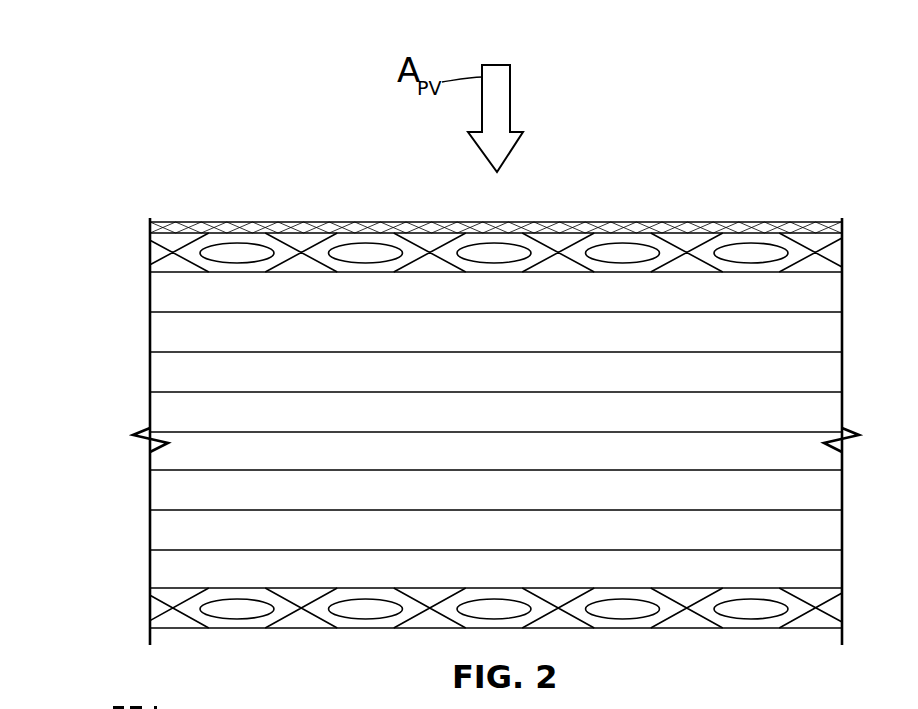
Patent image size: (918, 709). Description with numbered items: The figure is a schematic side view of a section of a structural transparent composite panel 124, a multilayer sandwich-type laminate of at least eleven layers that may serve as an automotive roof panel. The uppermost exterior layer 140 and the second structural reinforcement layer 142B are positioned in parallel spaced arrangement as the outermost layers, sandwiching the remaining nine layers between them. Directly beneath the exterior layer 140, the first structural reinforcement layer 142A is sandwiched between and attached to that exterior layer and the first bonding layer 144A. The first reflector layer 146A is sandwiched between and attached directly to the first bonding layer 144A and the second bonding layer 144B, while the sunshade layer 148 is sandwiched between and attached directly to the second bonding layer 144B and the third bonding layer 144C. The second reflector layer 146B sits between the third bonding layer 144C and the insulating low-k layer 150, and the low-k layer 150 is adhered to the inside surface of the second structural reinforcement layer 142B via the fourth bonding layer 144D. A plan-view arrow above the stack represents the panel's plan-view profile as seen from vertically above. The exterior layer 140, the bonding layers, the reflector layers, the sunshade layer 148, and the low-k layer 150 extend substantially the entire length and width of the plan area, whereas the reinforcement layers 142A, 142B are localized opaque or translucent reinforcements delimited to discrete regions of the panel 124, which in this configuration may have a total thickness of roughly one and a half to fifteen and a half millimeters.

The structural transparent composite panel 124 is at (210, 133).
The uppermost exterior layer 140 is at (150, 228).
The first structural reinforcement layer 142A is at (150, 244).
The first bonding layer 144A is at (150, 282).
The first reflector layer 146A is at (150, 323).
The second bonding layer 144B is at (150, 363).
The sunshade layer 148 is at (150, 402).
The third bonding layer 144C is at (150, 440).
The second reflector layer 146B is at (150, 480).
The insulating low-k layer 150 is at (150, 520).
The fourth bonding layer 144D is at (150, 560).
The second structural reinforcement layer 142B is at (150, 600).